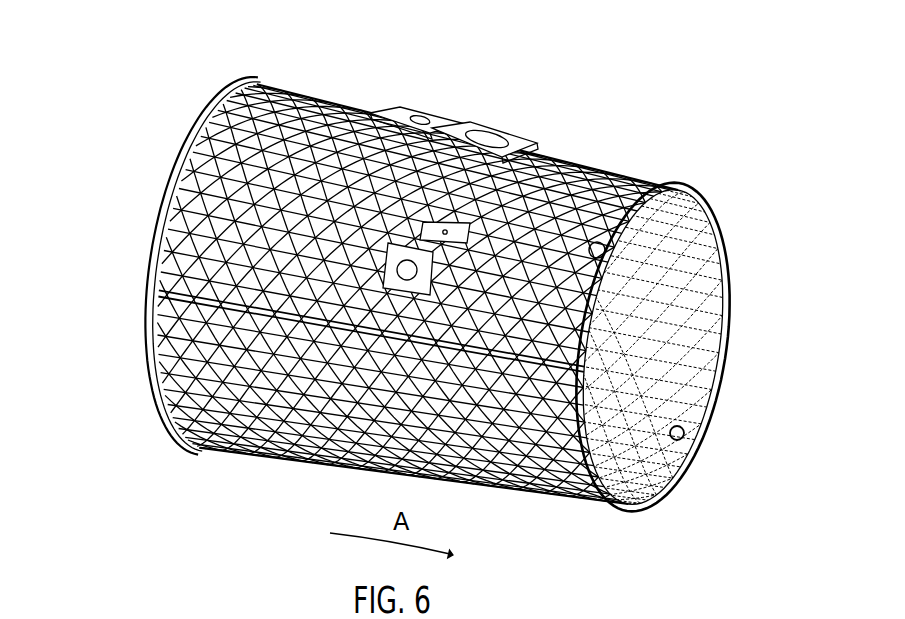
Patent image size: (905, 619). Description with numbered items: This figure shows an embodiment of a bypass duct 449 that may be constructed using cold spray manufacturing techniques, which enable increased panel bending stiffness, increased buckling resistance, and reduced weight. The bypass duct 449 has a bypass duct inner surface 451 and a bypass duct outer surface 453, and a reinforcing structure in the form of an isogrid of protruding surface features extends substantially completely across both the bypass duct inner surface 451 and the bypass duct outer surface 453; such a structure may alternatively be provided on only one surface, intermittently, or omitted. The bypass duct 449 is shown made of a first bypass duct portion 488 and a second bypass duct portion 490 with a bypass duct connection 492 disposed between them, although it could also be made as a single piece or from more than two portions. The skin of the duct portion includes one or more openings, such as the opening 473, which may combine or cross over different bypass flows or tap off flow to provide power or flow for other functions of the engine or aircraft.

The bypass duct 449 is at (577, 106).
The bypass duct inner surface 451 is at (727, 265).
The bypass duct outer surface 453 is at (392, 106).
The opening 473 is at (495, 133).
The first bypass duct portion 488 is at (183, 108).
The second bypass duct portion 490 is at (130, 382).
The bypass duct connection 492 is at (183, 292).